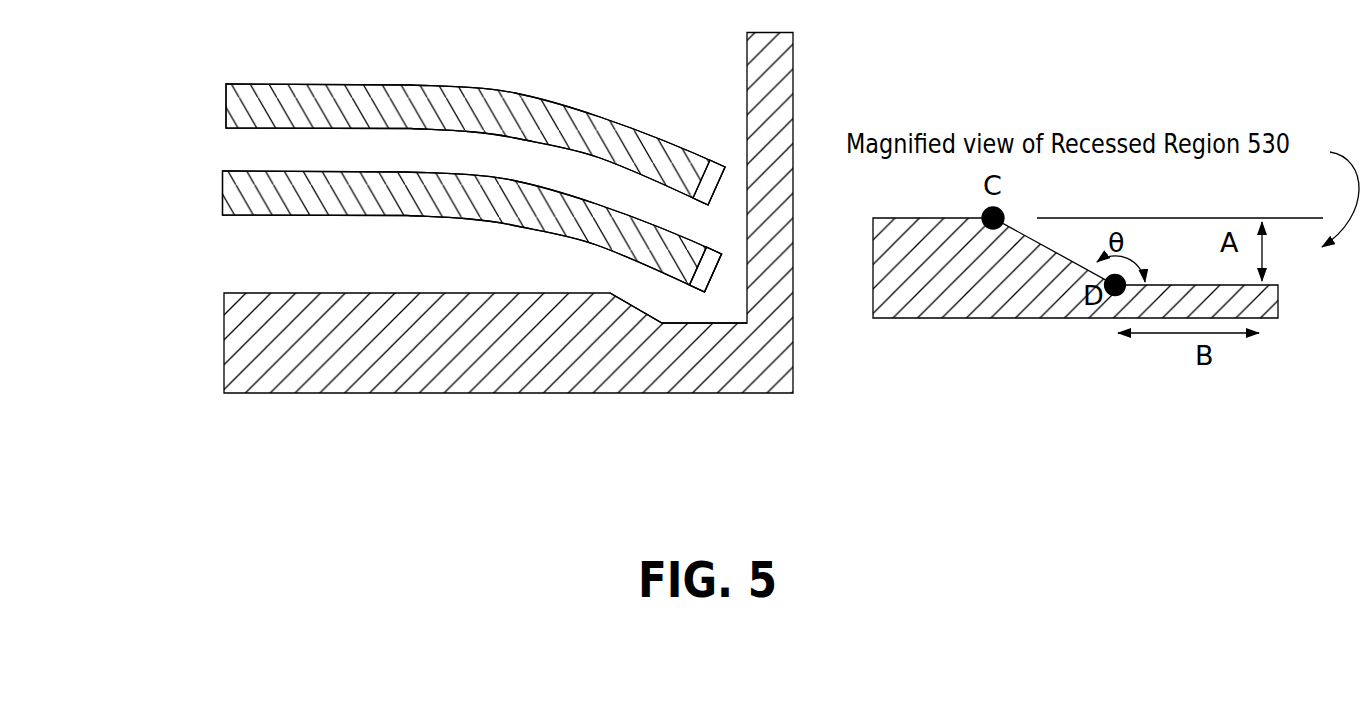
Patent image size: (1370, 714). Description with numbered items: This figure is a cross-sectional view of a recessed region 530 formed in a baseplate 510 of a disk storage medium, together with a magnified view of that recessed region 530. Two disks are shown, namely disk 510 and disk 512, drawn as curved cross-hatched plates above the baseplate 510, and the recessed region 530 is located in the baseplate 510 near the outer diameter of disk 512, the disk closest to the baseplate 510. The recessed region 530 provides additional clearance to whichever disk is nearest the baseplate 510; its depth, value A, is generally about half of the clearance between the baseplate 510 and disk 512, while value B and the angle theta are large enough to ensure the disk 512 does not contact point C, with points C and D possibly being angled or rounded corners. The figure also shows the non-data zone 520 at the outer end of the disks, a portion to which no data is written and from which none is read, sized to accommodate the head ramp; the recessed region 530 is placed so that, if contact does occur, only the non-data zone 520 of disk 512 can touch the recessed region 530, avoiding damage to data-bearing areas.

The baseplate 510 is at (226, 110).
The disk 512 is at (221, 197).
The non-data zone 520 is at (708, 258).
The recessed region 530 is at (690, 332).